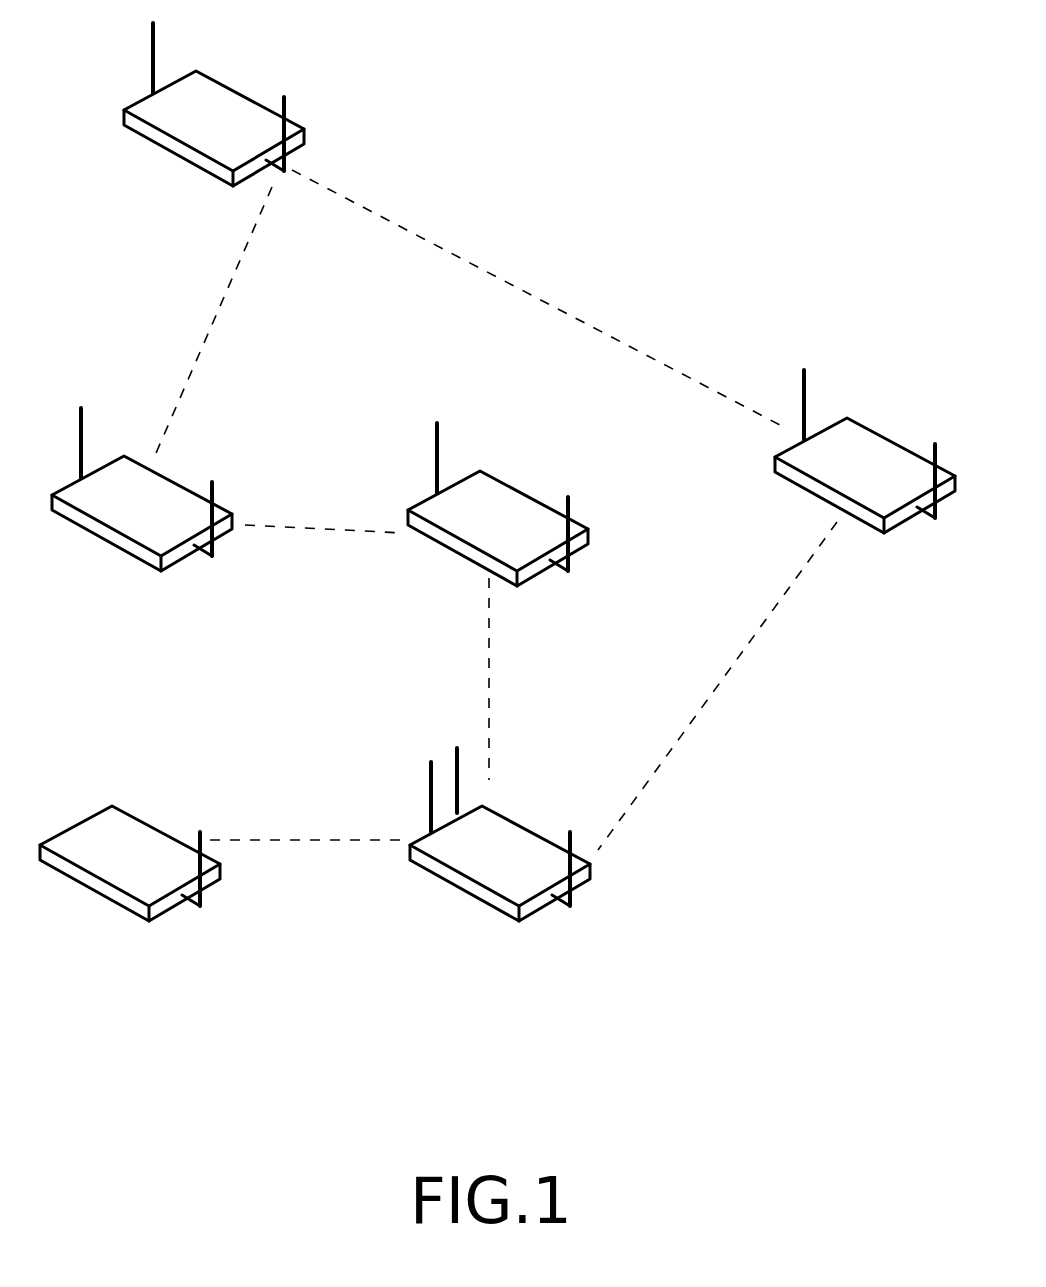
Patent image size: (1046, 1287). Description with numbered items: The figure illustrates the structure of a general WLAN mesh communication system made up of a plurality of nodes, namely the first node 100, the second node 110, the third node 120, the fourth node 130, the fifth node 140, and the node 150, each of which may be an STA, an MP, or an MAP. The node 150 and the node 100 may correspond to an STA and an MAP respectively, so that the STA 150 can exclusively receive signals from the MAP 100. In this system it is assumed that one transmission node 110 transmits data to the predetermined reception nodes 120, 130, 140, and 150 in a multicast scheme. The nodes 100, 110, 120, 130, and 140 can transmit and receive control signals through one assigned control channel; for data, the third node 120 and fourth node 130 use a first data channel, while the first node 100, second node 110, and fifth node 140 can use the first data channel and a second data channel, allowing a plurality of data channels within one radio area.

The first node 100 is at (533, 830).
The second node 110 is at (523, 493).
The third node 120 is at (195, 490).
The fourth node 130 is at (248, 100).
The fifth node 140 is at (900, 442).
The node 150 is at (163, 832).